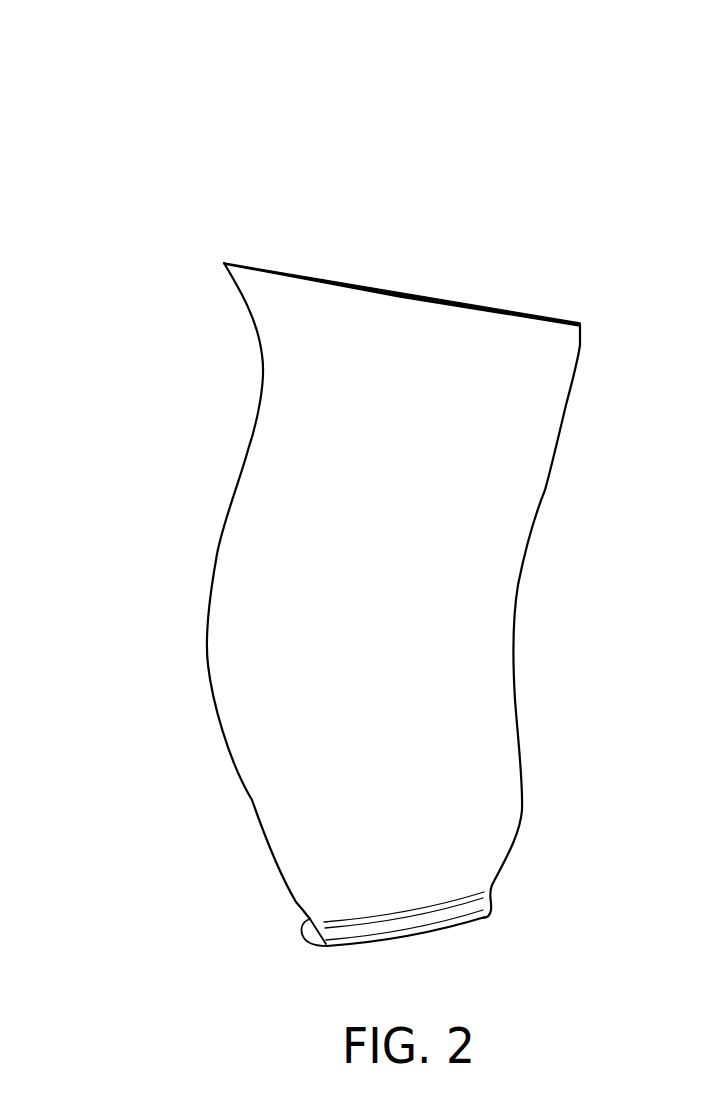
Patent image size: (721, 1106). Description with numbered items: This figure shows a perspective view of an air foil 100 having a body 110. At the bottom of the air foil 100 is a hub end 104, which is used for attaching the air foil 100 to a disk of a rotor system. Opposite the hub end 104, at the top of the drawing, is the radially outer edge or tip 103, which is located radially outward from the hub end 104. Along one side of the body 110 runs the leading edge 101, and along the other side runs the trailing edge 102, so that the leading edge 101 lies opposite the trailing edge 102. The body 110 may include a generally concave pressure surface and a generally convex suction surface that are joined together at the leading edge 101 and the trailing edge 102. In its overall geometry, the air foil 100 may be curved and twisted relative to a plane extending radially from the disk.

The air foil 100 is at (125, 143).
The leading edge 101 is at (217, 553).
The trailing edge 102 is at (519, 592).
The tip 103 is at (374, 286).
The hub end 104 is at (423, 918).
The body 110 is at (522, 475).